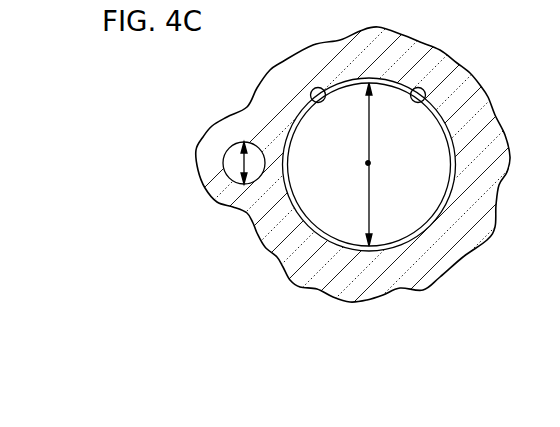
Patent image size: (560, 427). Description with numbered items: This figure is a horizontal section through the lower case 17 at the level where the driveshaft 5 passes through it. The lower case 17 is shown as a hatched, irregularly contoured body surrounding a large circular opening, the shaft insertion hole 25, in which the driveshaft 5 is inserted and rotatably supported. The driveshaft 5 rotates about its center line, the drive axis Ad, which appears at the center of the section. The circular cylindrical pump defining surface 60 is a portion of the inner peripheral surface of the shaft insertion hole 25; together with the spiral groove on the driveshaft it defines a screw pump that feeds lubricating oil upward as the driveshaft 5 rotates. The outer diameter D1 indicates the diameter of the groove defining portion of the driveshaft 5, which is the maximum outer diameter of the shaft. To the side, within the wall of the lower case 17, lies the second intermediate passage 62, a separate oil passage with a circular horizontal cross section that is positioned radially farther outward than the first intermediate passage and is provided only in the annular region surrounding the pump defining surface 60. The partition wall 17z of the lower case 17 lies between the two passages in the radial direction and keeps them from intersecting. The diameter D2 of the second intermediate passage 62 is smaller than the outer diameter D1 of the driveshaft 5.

The lower case 17 is at (473, 240).
The partition wall 17z is at (268, 163).
The driveshaft 5 is at (413, 238).
The shaft insertion hole 25 is at (310, 96).
The pump defining surface 60 is at (427, 100).
The second intermediate passage 62 is at (233, 170).
The outer diameter of the groove defining portion D1 is at (368, 190).
The diameter of the second intermediate passage D2 is at (242, 157).
The drive axis Ad is at (371, 163).